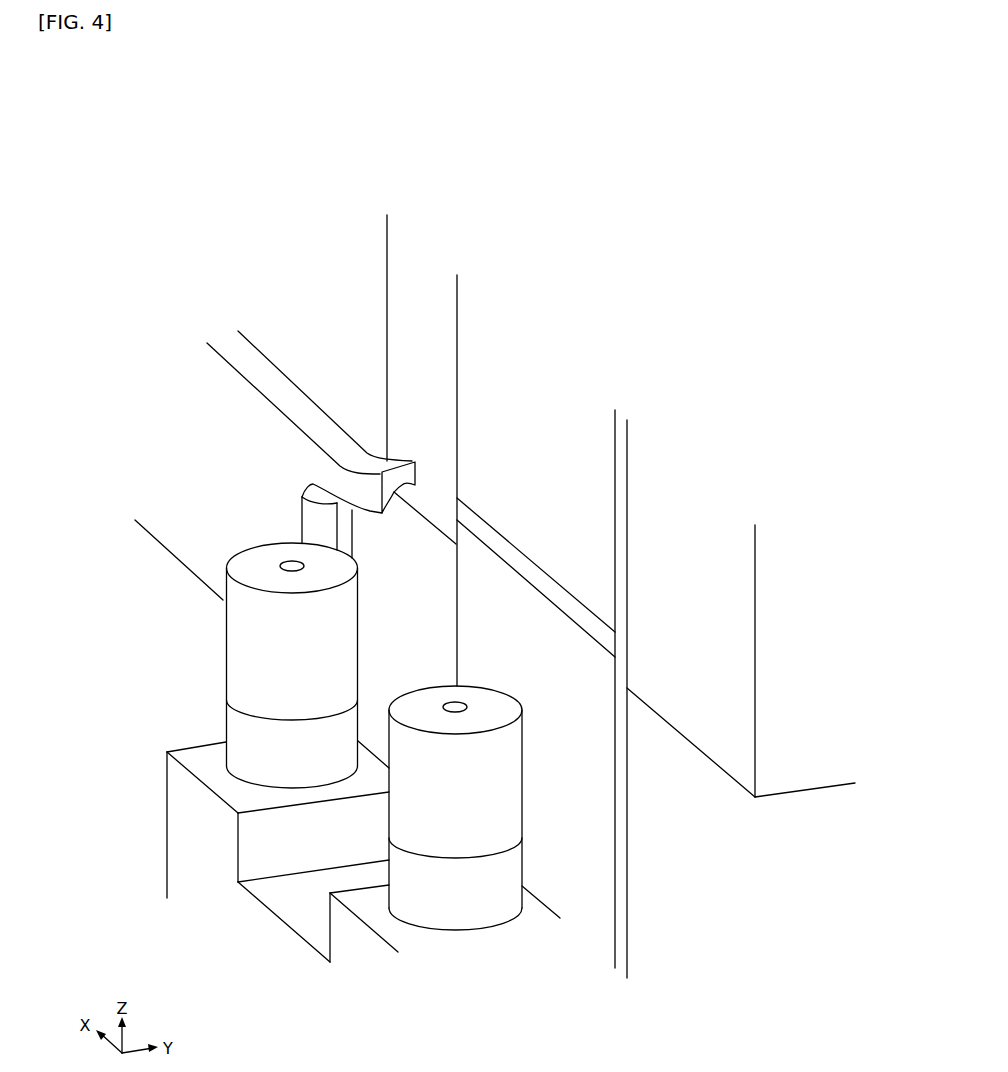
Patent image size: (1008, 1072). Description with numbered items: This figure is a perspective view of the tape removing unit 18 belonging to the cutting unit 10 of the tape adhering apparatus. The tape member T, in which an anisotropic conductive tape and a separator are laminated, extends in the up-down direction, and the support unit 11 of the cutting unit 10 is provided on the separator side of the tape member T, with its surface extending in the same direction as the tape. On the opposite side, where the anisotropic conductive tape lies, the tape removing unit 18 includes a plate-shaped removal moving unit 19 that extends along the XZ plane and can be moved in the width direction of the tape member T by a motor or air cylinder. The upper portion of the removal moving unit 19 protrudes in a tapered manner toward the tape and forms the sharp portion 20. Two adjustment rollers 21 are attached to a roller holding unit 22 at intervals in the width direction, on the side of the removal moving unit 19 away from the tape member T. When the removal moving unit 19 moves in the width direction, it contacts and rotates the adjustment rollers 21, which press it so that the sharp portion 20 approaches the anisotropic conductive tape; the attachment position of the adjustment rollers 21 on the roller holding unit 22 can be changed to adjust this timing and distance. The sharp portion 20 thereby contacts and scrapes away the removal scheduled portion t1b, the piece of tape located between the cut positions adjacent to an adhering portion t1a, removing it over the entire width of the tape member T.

The cutting unit 10 is at (258, 188).
The support unit 11 is at (818, 777).
The tape removing unit 18 is at (150, 327).
The removal moving unit 19 is at (180, 548).
The sharp portion 20 is at (412, 476).
The adjustment roller 21 is at (233, 635).
The roller holding unit 22 is at (175, 823).
The tape member T is at (633, 431).
The adhering portion t1a is at (613, 477).
The removal scheduled portion t1b is at (613, 645).